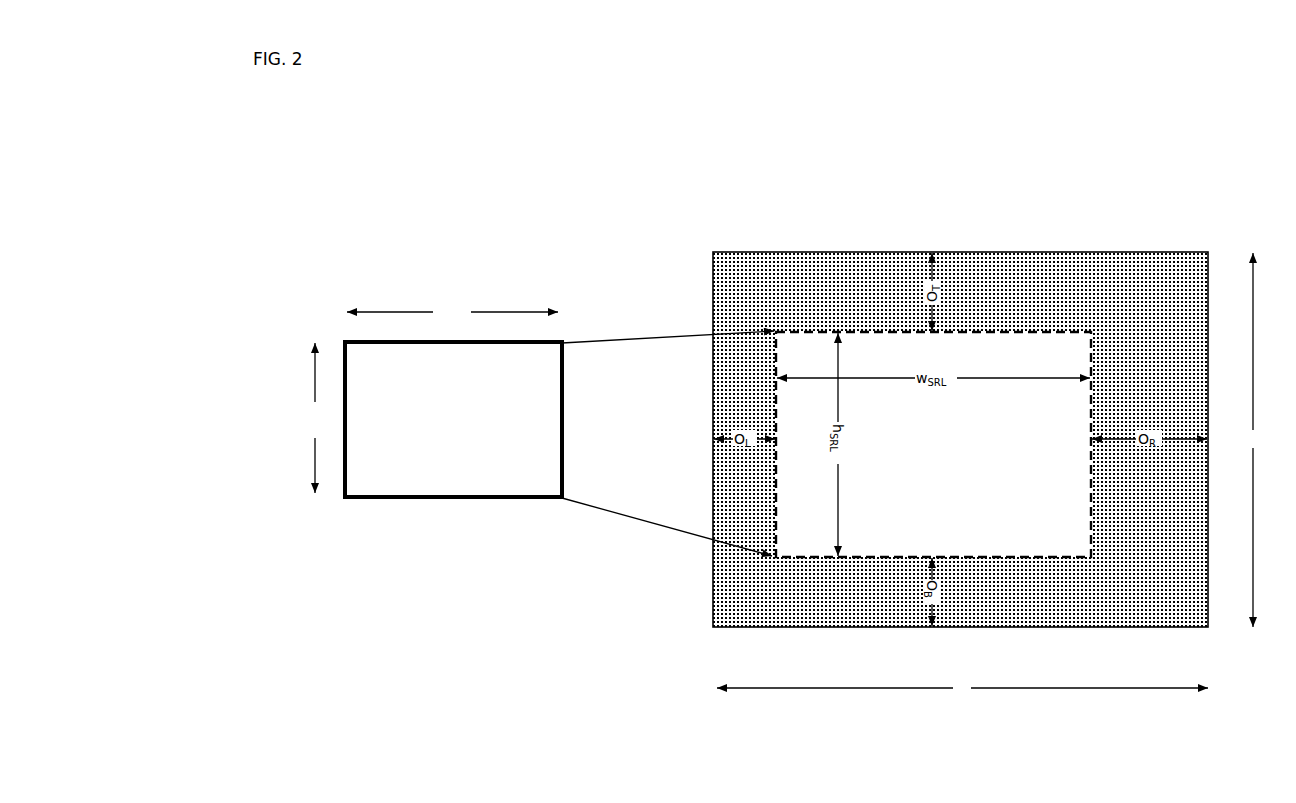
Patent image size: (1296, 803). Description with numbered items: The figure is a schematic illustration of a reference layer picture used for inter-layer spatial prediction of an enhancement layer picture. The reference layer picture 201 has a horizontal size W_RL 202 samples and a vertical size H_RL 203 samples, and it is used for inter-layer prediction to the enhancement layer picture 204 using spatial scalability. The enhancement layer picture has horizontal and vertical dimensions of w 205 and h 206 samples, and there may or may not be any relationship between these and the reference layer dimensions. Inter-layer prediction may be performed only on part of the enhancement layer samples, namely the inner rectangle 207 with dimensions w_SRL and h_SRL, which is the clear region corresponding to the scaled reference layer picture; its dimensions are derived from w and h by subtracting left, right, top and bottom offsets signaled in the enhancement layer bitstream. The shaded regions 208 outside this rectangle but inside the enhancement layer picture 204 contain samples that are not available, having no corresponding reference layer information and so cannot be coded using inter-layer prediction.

The reference layer picture 201 is at (453, 419).
The horizontal size W_RL 202 is at (440, 295).
The vertical size H_RL 203 is at (297, 424).
The enhancement layer picture 204 is at (766, 251).
The horizontal dimension w 205 is at (962, 705).
The vertical dimension h 206 is at (1256, 250).
The inner rectangle 207 is at (1080, 330).
The regions of unavailable samples 208 is at (745, 594).